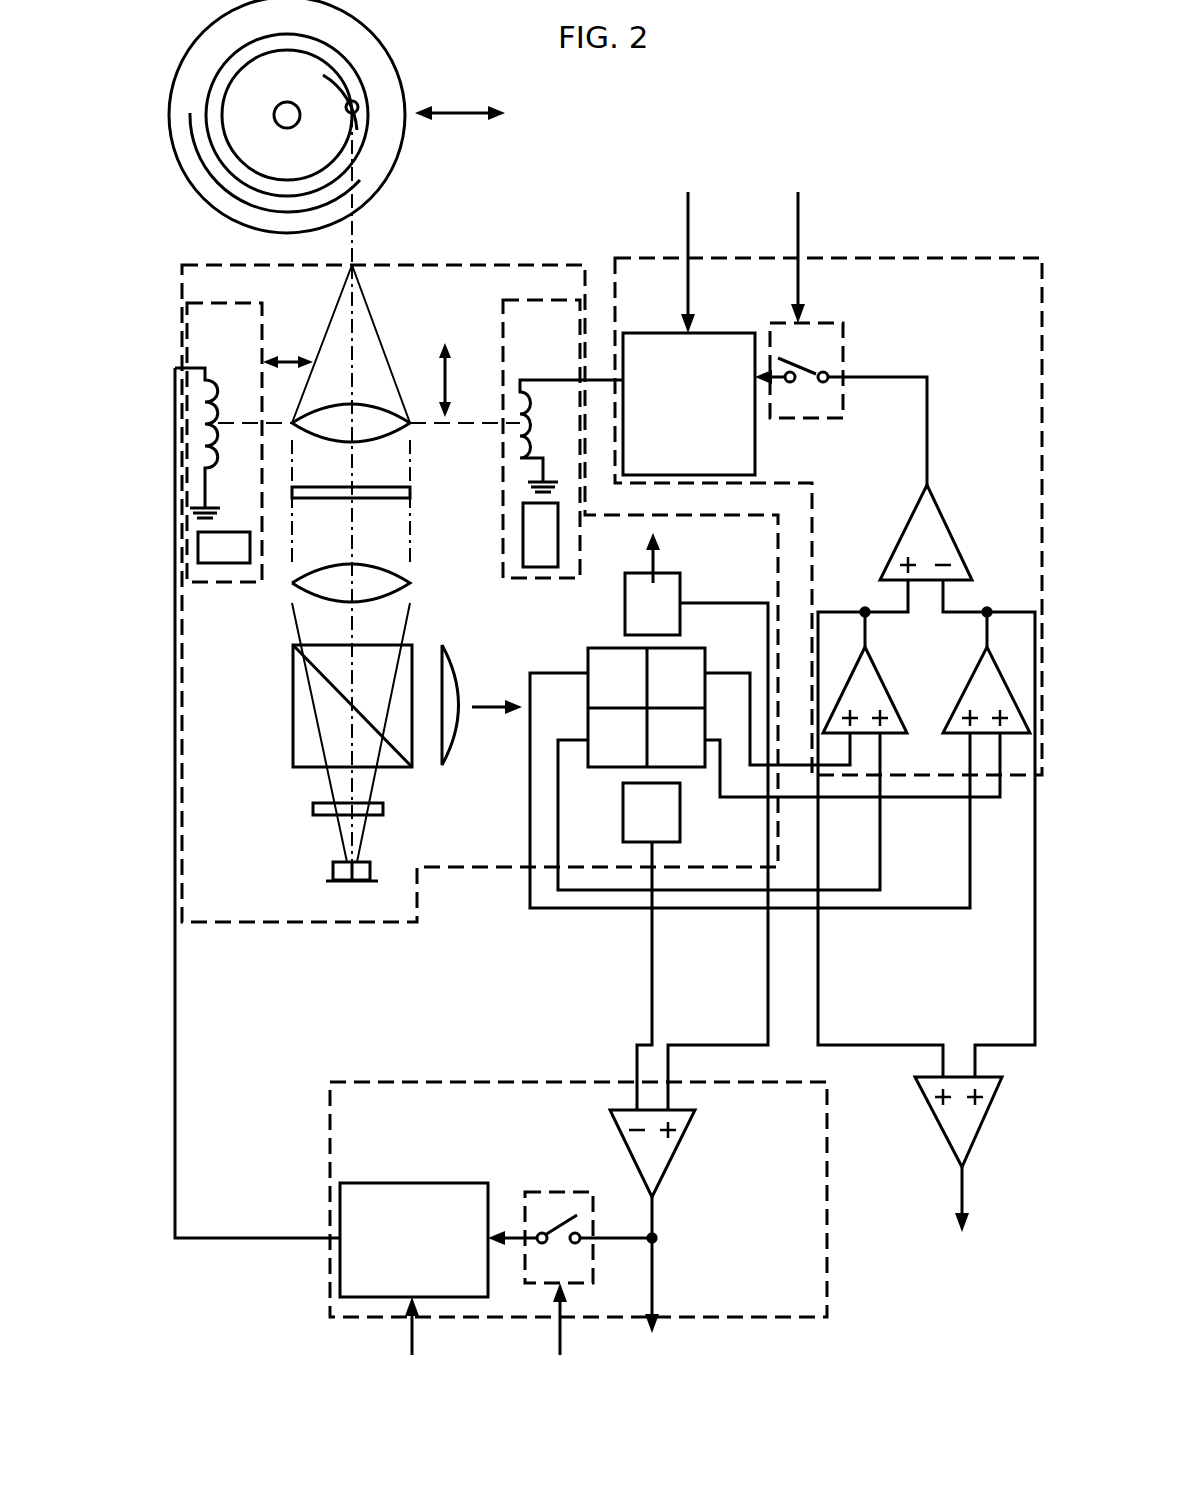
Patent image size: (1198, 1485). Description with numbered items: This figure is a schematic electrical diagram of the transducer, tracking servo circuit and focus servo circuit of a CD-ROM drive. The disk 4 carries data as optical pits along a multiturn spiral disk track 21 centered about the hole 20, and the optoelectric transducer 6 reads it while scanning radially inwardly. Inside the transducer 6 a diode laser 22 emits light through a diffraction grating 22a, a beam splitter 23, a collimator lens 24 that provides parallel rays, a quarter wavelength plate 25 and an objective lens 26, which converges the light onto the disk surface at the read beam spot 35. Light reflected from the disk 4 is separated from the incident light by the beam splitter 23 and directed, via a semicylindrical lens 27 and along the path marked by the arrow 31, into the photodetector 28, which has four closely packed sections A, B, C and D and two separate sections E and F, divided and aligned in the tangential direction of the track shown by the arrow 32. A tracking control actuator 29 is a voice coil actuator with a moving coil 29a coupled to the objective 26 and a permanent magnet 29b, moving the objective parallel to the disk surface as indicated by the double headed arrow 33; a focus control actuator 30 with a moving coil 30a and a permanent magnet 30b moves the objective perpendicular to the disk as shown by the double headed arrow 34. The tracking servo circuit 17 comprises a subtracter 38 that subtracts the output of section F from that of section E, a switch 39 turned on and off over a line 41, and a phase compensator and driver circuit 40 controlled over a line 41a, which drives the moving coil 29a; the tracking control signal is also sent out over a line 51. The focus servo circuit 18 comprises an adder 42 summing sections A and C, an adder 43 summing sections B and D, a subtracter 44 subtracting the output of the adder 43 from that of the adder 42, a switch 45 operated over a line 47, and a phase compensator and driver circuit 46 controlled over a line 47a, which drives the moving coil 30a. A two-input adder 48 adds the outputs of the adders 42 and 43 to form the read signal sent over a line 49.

The disk 4 is at (393, 52).
The hole 20 is at (300, 110).
The disk track 21 is at (358, 110).
The read beam spot 35 is at (353, 120).
The transducer 6 is at (470, 265).
The tracking control actuator 29 is at (250, 305).
The moving coil 29a is at (208, 366).
The permanent magnet 29b is at (228, 530).
The double headed arrow 33 is at (288, 360).
The double headed arrow 34 is at (448, 372).
The focus control actuator 30 is at (503, 300).
The moving coil 30a is at (520, 376).
The permanent magnet 30b is at (540, 567).
The objective lens 26 is at (410, 424).
The quarter wavelength plate 25 is at (410, 492).
The collimator lens 24 is at (410, 583).
The beam splitter 23 is at (293, 735).
The diffraction grating 22a is at (313, 809).
The diode laser 22 is at (333, 875).
The semicylindrical lens 27 is at (452, 660).
The light beam to detector 31 is at (484, 710).
The photodetector 28 is at (698, 598).
The arrow 32 is at (650, 553).
The focus servo circuit 18 is at (882, 240).
The phase compensator and driver circuit 46 is at (645, 330).
The switch 45 is at (828, 323).
The line 47 is at (796, 220).
The line 47a is at (686, 222).
The subtracter 44 is at (958, 560).
The adder 42 is at (878, 678).
The adder 43 is at (963, 675).
The tracking servo circuit 17 is at (330, 1178).
The phase compensator and driver circuit 40 is at (425, 1182).
The switch 39 is at (553, 1192).
The subtracter 38 is at (675, 1152).
The line 51 is at (656, 1305).
The adder 48 is at (935, 1128).
The line 49 is at (960, 1190).
The line 41 is at (563, 1333).
The line 41a is at (415, 1333).